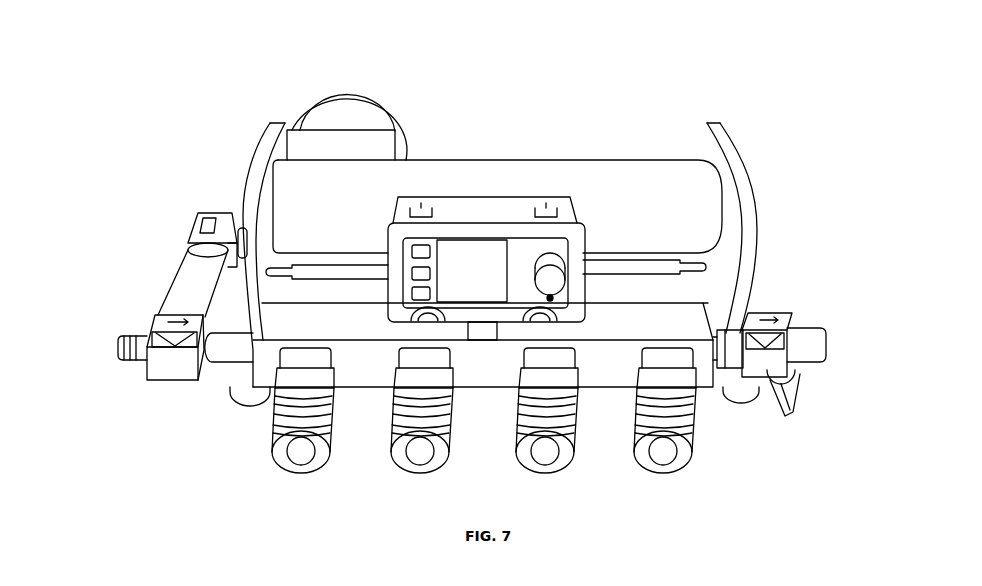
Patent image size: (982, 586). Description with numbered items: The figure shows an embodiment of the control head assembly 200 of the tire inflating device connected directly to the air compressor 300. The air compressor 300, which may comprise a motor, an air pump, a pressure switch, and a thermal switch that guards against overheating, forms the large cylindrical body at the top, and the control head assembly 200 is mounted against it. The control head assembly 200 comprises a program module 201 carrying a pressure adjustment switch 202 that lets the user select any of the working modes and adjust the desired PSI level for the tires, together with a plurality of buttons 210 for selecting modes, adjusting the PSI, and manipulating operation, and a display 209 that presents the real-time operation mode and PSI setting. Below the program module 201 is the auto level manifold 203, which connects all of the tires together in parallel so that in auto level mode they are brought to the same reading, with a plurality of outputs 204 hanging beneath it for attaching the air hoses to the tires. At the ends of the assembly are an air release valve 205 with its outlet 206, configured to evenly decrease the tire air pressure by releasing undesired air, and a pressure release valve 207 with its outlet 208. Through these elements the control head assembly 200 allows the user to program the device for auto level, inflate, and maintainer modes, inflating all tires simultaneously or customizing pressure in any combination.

The control head assembly 200 is at (170, 168).
The program module 201 is at (507, 210).
The pressure adjustment switch 202 is at (551, 266).
The auto level manifold 203 is at (665, 338).
The plurality of outputs 204 is at (280, 457).
The air release valve 205 is at (792, 402).
The outlet 206 is at (813, 347).
The pressure release valve 207 is at (162, 367).
The outlet 208 is at (118, 347).
The display 209 is at (482, 262).
The plurality of buttons 210 is at (418, 252).
The air compressor 300 is at (628, 195).